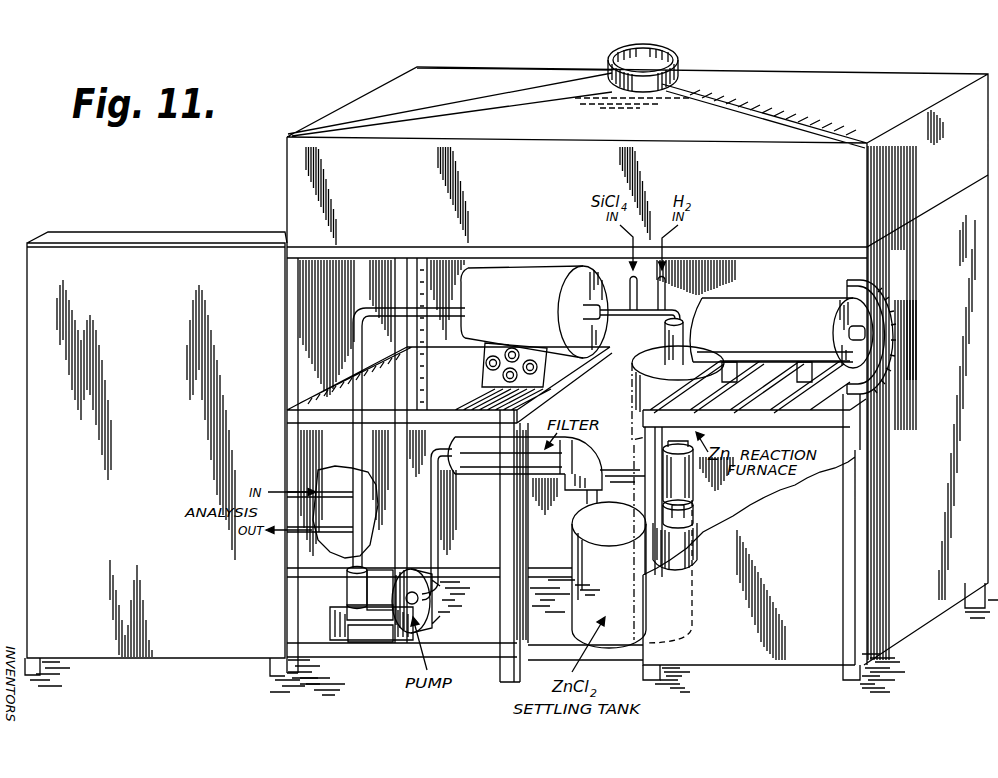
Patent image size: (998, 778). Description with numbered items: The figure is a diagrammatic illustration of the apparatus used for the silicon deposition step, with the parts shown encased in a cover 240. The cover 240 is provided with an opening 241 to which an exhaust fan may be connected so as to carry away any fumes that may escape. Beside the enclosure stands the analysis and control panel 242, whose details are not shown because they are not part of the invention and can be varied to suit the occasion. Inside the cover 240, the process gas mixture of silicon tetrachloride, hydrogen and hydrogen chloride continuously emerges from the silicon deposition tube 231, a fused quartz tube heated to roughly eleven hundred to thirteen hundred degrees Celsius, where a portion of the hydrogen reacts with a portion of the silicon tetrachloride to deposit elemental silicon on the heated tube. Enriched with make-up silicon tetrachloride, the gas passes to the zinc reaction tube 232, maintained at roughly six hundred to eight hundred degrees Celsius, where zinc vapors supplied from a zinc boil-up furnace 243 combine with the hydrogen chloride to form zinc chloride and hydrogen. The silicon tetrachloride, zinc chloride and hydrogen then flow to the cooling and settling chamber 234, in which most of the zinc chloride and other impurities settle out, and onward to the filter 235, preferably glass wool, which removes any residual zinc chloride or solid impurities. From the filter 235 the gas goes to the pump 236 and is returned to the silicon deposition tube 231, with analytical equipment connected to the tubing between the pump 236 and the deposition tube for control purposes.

The cover 240 is at (808, 73).
The opening 241 is at (643, 52).
The analysis and control panel 242 is at (144, 247).
The silicon deposition tube 231 is at (525, 267).
The zinc reaction tube 232 is at (636, 392).
The zinc boil-up furnace 243 is at (760, 298).
The cooling and settling chamber 234 is at (572, 552).
The filter 235 is at (477, 466).
The pump 236 is at (378, 611).